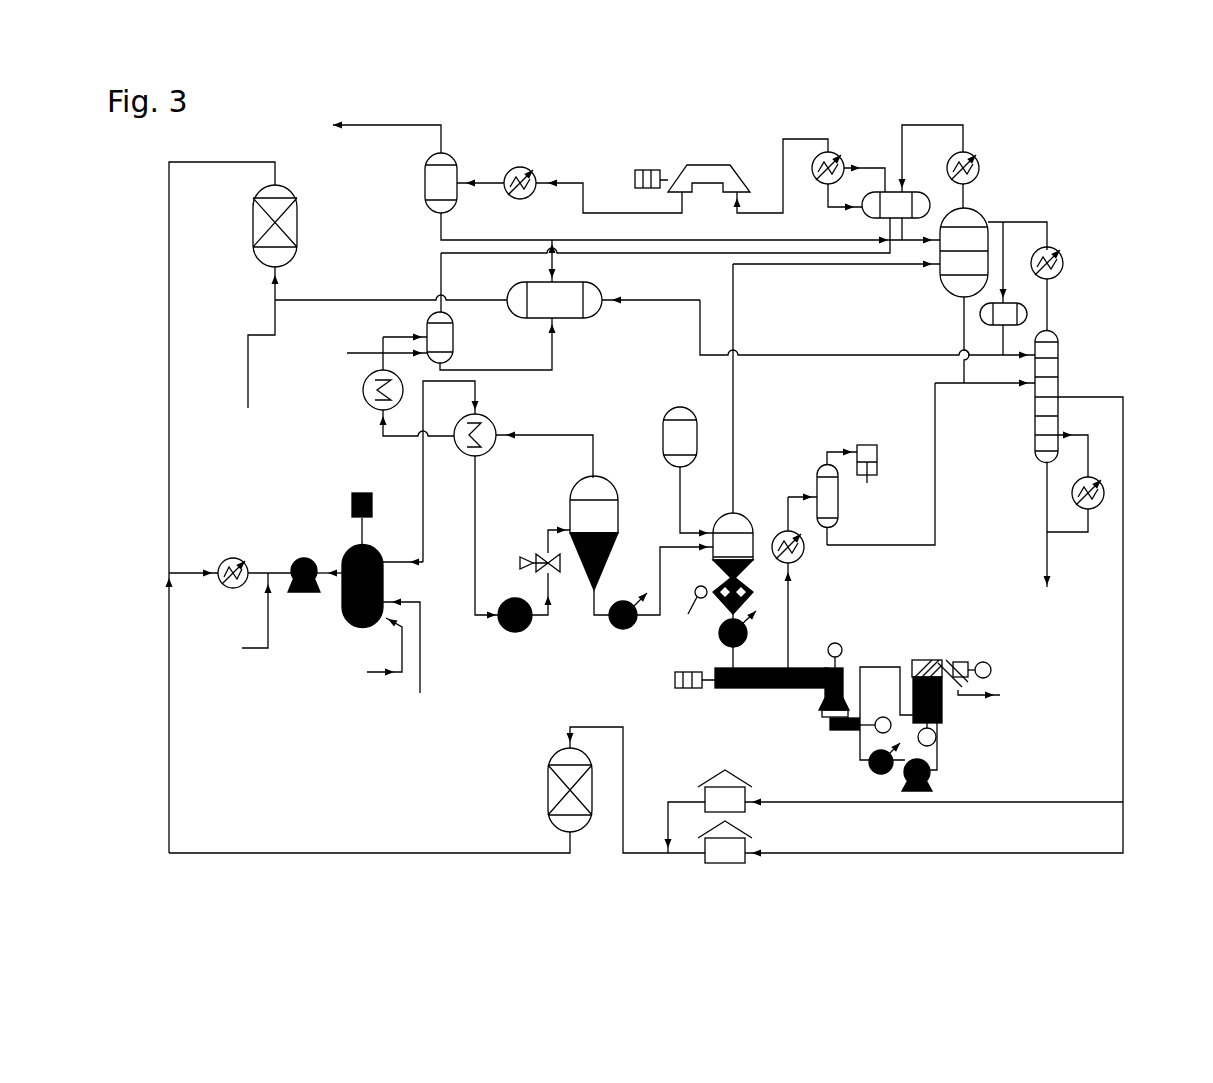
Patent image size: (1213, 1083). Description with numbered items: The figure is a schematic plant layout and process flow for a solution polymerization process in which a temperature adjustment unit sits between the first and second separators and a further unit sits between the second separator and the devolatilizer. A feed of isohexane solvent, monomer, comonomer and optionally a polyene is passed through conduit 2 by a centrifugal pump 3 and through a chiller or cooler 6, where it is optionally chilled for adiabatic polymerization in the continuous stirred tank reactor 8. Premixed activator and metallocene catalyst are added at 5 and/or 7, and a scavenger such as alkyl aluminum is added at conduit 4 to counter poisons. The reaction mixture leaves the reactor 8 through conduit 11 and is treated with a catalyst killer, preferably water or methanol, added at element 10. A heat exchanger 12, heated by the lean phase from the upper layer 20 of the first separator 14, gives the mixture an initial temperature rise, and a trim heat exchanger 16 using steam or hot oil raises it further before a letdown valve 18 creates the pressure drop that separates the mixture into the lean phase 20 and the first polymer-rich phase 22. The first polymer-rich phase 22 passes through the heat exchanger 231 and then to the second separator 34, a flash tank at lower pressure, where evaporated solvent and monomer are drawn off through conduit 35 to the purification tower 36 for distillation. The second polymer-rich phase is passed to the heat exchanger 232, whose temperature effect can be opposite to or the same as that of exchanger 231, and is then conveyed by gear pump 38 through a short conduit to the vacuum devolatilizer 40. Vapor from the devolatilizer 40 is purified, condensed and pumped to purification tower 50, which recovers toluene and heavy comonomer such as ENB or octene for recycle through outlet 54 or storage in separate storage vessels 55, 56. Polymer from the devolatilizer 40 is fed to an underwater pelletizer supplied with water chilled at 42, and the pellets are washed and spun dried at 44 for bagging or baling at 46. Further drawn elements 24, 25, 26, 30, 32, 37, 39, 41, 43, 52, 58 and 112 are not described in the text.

The conduit 2 is at (167, 475).
The centrifugal pump 3 is at (297, 557).
The conduit 4 is at (249, 618).
The catalyst addition point 5 is at (376, 651).
The chiller or cooler 6 is at (229, 557).
The catalyst addition point 7 is at (422, 679).
The continuous stirred tank reactor 8 is at (345, 545).
The catalyst killer addition element 10 is at (432, 566).
The conduit 11 is at (422, 461).
The heat exchanger 12 is at (491, 421).
The first separator 14 is at (576, 484).
The trim heat exchanger 16 is at (525, 634).
The letdown valve 18 is at (541, 556).
The lean phase 20 is at (568, 511).
The first polymer-rich phase 22 is at (606, 579).
The heat exchanger 24 is at (360, 392).
The inlet line 25 is at (369, 355).
The vessel 26 is at (456, 341).
The outlet line 30 is at (257, 356).
The reactor 32 is at (300, 226).
The second separator 34 is at (746, 512).
The conduit 35 is at (736, 411).
The purification tower 36 is at (989, 212).
The line 37 is at (928, 125).
The gear pump 38 is at (690, 613).
The drum 39 is at (862, 213).
The vacuum devolatilizer 40 is at (729, 691).
The vessel 41 is at (554, 300).
The chilled water feed 42 is at (865, 769).
The line 43 is at (385, 299).
The pellet washing and spin drying station 44 is at (943, 721).
The bagging or baling station 46 is at (994, 697).
The purification tower 50 is at (1060, 365).
The outlet line 52 is at (1044, 560).
The outlet 54 is at (1126, 729).
The storage vessel 55 is at (725, 791).
The storage vessel 56 is at (725, 842).
The recycle line 58 is at (346, 852).
The outlet line 112 is at (405, 128).
The heat exchanger 231 is at (629, 631).
The heat exchanger 232 is at (748, 622).